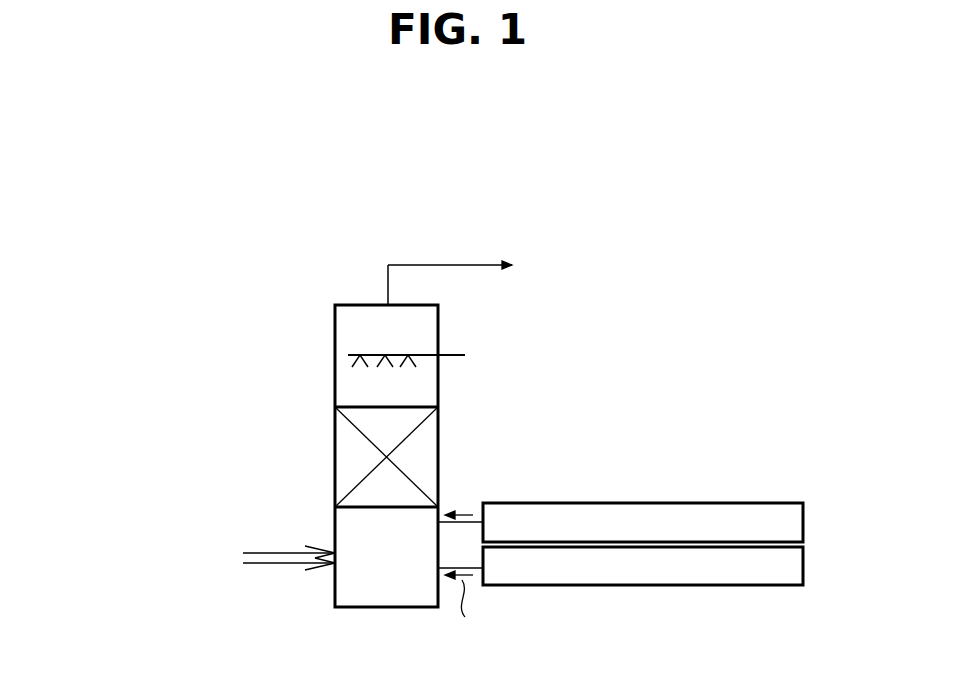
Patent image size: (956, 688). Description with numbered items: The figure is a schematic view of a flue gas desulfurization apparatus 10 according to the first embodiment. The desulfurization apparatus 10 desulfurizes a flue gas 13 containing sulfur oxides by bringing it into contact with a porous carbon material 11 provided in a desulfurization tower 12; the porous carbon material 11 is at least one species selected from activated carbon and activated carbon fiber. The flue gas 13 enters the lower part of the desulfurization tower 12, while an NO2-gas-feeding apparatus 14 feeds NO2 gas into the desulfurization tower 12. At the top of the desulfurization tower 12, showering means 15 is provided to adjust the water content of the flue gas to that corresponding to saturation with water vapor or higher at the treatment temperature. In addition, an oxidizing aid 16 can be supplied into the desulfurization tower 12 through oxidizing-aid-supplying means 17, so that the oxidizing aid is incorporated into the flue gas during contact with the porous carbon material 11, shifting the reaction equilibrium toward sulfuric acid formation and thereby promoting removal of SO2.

The desulfurization apparatus 10 is at (318, 276).
The porous carbon material 11 is at (334, 441).
The desulfurization tower 12 is at (439, 384).
The flue gas 13 is at (281, 566).
The NO2-gas-feeding apparatus 14 is at (804, 562).
The showering means 15 is at (412, 355).
The oxidizing aid 16 is at (462, 512).
The oxidizing-aid-supplying means 17 is at (804, 520).